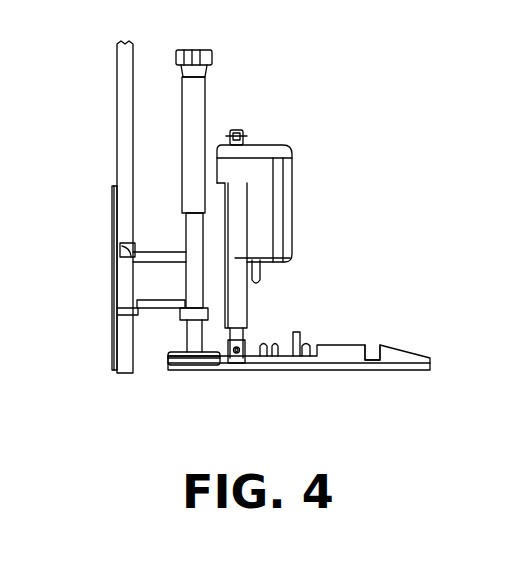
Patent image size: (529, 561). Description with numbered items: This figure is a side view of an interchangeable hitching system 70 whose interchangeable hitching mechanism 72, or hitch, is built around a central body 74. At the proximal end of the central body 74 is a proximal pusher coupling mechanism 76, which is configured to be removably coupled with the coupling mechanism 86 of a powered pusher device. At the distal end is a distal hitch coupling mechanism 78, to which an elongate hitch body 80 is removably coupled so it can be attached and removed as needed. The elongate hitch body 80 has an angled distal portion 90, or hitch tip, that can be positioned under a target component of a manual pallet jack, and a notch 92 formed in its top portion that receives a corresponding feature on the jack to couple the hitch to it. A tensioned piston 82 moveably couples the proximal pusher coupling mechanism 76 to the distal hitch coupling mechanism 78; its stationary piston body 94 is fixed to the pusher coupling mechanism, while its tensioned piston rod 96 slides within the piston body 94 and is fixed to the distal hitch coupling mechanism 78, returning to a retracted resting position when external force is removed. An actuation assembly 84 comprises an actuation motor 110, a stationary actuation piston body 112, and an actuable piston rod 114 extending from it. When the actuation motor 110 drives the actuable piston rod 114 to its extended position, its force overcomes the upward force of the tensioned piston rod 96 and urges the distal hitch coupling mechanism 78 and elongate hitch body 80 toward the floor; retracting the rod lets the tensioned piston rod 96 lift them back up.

The interchangeable hitching system 70 is at (54, 92).
The interchangeable hitching mechanism 72 is at (296, 84).
The central body 74 is at (216, 380).
The proximal pusher coupling mechanism 76 is at (150, 372).
The distal hitch coupling mechanism 78 is at (252, 352).
The elongate hitch body 80 is at (343, 358).
The tensioned piston 82 is at (178, 109).
The actuation assembly 84 is at (305, 150).
The coupling mechanism 86 is at (124, 338).
The angled distal portion 90 is at (415, 338).
The notch 92 is at (371, 340).
The stationary piston body 94 is at (197, 182).
The tensioned piston rod 96 is at (198, 338).
The actuation motor 110 is at (262, 238).
The stationary actuation piston body 112 is at (237, 287).
The actuable piston rod 114 is at (238, 366).